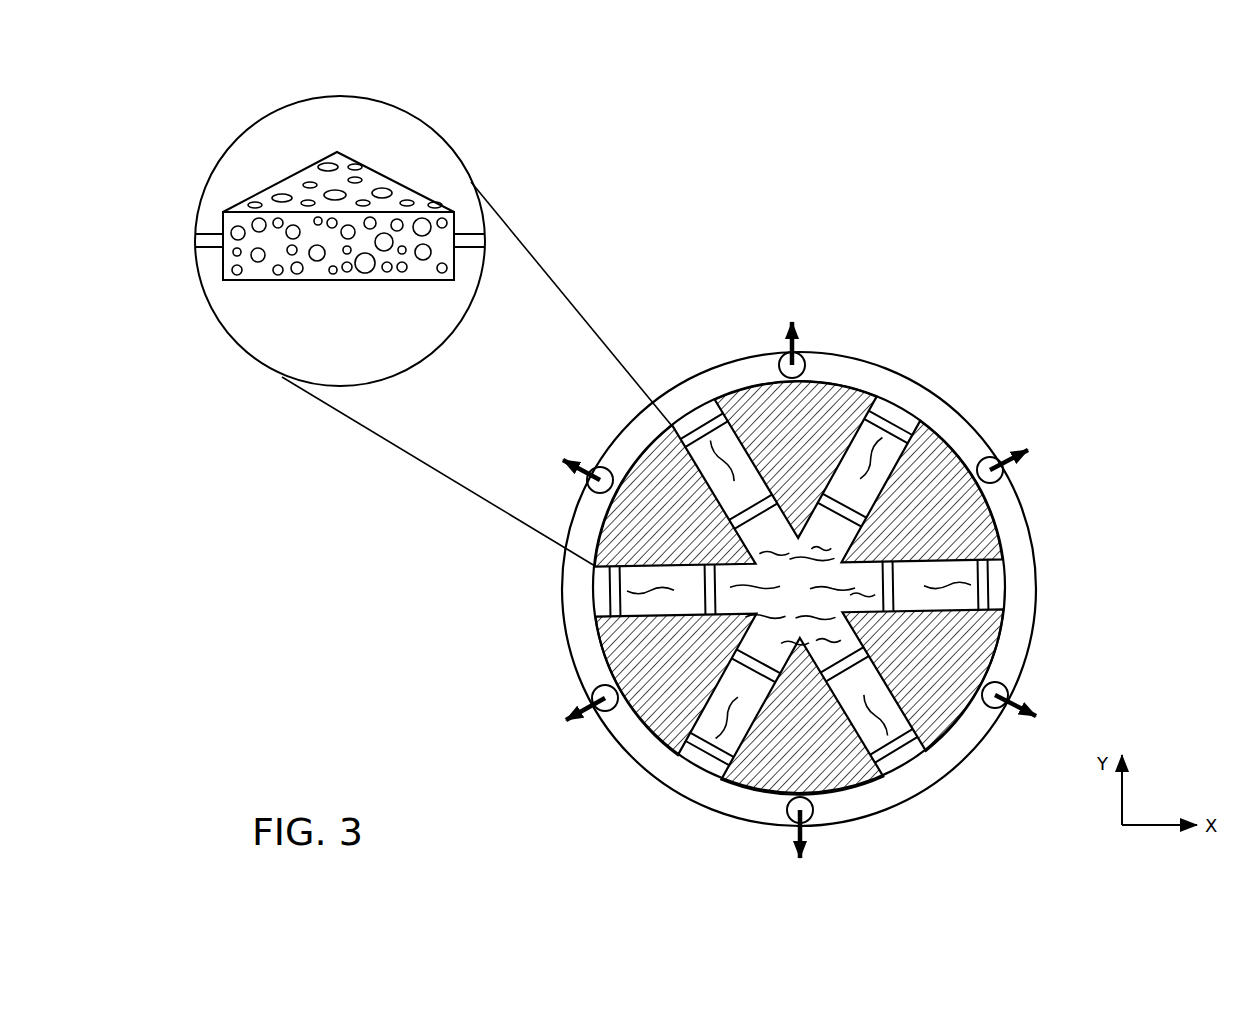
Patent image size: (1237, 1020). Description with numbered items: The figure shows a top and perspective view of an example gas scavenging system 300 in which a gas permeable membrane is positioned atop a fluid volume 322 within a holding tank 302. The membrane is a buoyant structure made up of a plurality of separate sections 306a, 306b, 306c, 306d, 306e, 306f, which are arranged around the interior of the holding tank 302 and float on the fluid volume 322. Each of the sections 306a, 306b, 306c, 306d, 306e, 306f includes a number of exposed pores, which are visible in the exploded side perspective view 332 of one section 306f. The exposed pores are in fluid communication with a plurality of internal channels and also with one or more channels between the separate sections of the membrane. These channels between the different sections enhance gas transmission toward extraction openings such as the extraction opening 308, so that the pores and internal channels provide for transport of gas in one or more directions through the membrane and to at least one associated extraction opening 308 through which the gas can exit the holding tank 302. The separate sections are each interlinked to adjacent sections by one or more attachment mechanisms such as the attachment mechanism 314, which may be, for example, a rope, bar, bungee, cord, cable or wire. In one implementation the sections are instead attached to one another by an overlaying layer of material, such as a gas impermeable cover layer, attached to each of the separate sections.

The gas scavenging system 300 is at (1020, 232).
The holding tank 302 is at (938, 391).
The section of gas permeable membrane 306a is at (771, 472).
The section of gas permeable membrane 306b is at (887, 532).
The section of gas permeable membrane 306c is at (916, 668).
The section of gas permeable membrane 306d is at (776, 745).
The section of gas permeable membrane 306e is at (646, 668).
The section of gas permeable membrane 306f is at (687, 526).
The extraction opening 308 is at (994, 712).
The attachment mechanism 314 is at (988, 578).
The fluid volume 322 is at (650, 759).
The exploded side perspective view 332 is at (432, 132).